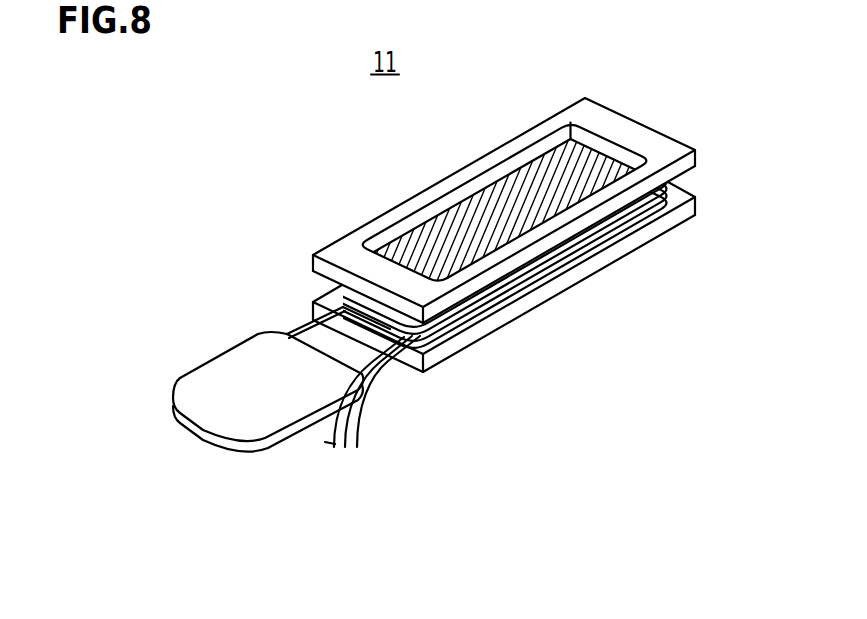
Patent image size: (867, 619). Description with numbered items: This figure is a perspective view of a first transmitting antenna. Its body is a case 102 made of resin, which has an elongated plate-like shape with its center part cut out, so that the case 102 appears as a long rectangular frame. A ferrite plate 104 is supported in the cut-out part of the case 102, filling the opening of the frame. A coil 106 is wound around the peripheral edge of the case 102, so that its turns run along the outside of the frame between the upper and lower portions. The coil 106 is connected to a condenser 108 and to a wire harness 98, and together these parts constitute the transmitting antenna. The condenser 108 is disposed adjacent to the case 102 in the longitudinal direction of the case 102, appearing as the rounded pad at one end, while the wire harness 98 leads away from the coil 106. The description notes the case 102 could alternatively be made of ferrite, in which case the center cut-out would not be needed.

The wire harness 98 is at (384, 391).
The case 102 is at (343, 245).
The ferrite plate 104 is at (524, 172).
The coil 106 is at (557, 251).
The condenser 108 is at (238, 362).